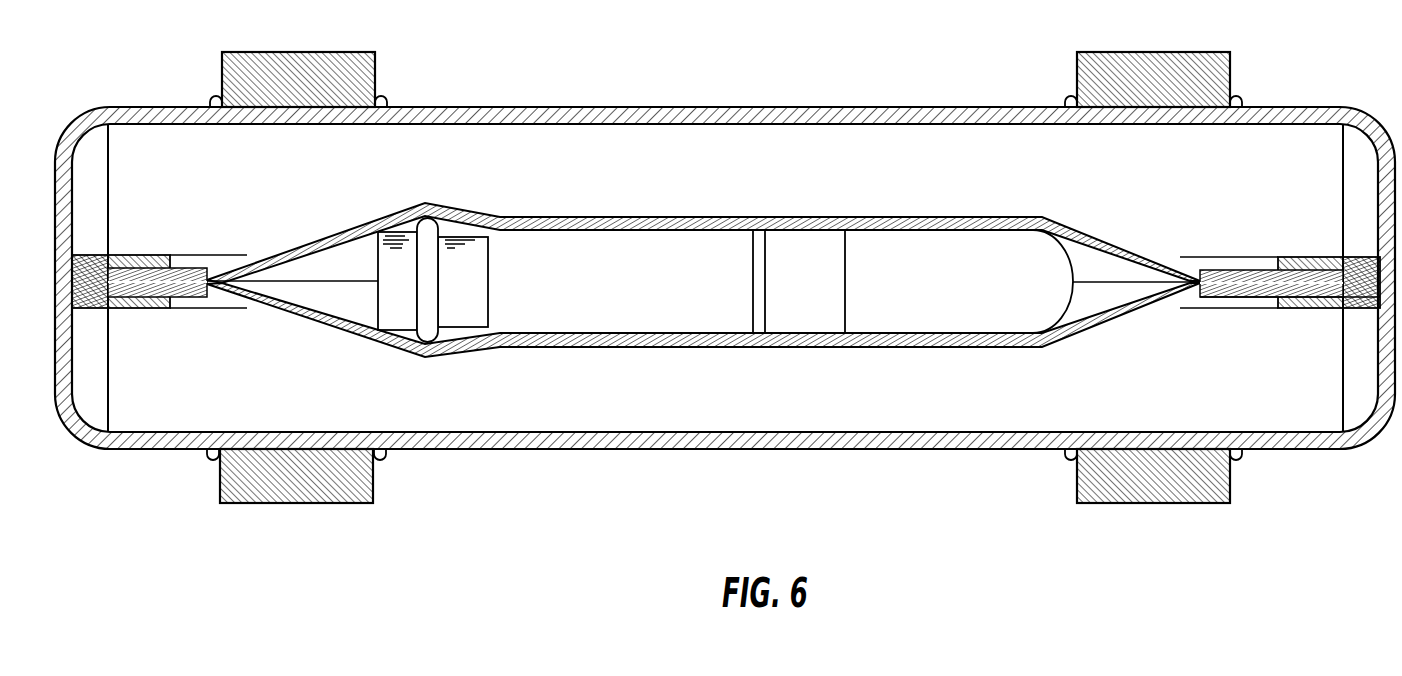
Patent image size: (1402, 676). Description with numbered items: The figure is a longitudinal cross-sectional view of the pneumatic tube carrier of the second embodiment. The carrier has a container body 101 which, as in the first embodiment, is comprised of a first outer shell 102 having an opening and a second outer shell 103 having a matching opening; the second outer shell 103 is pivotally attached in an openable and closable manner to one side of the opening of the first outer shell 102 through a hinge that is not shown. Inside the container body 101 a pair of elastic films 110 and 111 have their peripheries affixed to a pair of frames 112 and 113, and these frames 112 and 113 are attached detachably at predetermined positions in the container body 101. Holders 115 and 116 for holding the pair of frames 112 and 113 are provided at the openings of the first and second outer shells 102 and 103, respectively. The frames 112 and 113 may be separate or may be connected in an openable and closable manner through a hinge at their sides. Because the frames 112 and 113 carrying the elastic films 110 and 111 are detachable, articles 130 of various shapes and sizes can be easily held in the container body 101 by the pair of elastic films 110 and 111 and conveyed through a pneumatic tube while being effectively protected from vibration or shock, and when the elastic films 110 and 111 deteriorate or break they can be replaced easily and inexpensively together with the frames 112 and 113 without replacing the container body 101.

The container body 101 is at (725, 280).
The first outer shell 102 is at (725, 394).
The second outer shell 103 is at (725, 163).
The elastic film 110 is at (703, 308).
The elastic film 111 is at (703, 221).
The frame 112 is at (1290, 326).
The frame 113 is at (726, 253).
The holder 115 is at (725, 366).
The holder 116 is at (725, 278).
The article 130 is at (746, 315).